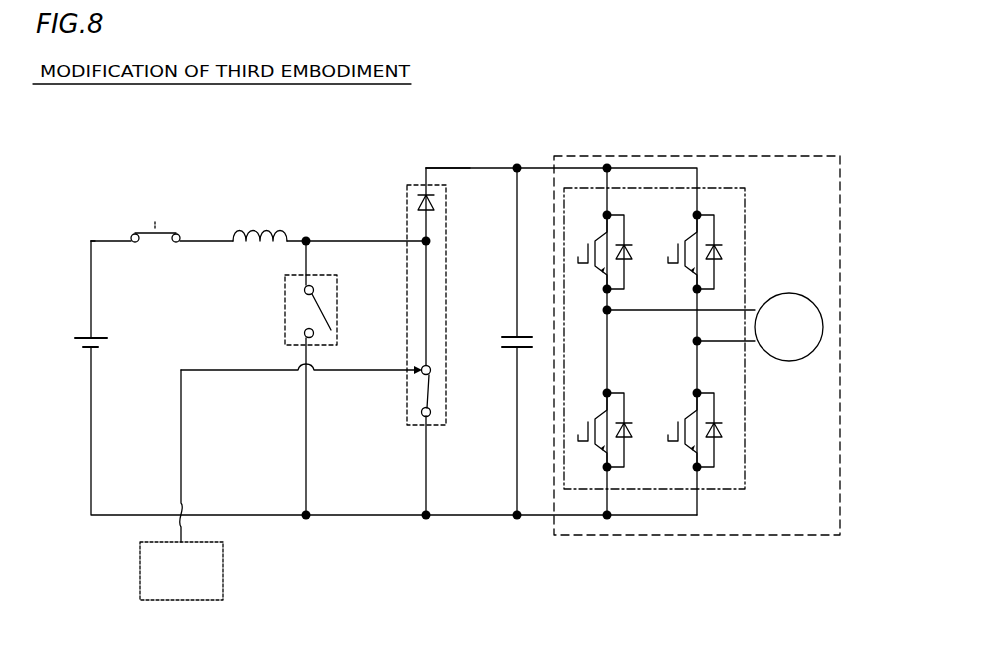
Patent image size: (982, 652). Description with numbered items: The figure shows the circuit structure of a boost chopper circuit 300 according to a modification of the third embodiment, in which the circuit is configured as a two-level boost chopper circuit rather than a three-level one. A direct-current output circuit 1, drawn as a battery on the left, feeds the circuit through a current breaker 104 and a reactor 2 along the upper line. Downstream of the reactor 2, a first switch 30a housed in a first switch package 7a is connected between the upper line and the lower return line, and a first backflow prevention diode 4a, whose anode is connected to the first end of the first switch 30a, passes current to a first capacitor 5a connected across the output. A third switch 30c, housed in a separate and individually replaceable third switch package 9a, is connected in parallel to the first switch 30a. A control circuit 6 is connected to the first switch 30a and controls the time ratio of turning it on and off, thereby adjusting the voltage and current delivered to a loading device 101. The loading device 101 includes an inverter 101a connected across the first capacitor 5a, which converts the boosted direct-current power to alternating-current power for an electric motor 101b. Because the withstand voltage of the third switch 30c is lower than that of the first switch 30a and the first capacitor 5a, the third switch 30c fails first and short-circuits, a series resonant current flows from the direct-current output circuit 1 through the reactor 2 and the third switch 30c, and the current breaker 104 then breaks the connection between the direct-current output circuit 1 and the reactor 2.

The boost chopper circuit 300 is at (87, 174).
The current breaker 104 is at (138, 231).
The reactor 2 is at (237, 238).
The direct-current output circuit 1 is at (82, 336).
The third switch package 9a is at (284, 330).
The third switch 30c is at (313, 292).
The first backflow prevention diode 4a is at (420, 205).
The first switch package 7a is at (437, 169).
The first switch 30a is at (428, 392).
The first capacitor 5a is at (510, 335).
The loading device 101 is at (712, 152).
The inverter 101a is at (746, 242).
The electric motor 101b is at (791, 290).
The control circuit 6 is at (140, 568).